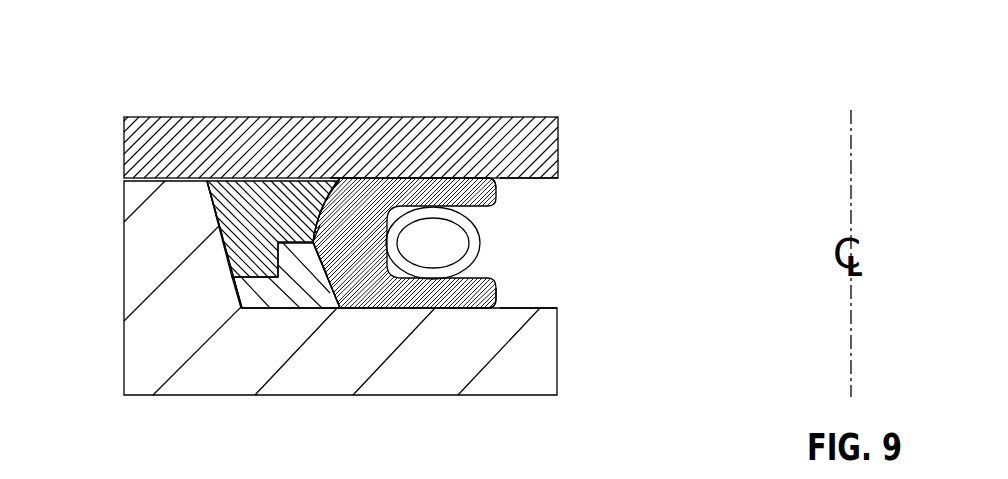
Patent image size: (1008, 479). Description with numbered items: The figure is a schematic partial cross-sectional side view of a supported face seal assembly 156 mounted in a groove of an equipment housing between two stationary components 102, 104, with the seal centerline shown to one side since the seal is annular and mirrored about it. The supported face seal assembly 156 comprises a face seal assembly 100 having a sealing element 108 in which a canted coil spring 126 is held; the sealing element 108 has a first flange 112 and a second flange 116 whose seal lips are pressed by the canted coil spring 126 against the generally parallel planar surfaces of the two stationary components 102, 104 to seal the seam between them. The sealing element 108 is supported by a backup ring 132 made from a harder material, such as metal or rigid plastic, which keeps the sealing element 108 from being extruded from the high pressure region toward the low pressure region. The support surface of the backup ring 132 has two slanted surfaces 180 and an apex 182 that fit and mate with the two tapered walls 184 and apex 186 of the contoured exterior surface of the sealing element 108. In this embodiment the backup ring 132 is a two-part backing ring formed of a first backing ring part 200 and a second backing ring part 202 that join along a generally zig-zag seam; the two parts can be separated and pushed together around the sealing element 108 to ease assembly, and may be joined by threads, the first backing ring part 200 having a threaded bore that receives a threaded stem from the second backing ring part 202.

The face seal assembly 100 is at (433, 244).
The stationary component 102 is at (555, 140).
The stationary component 104 is at (410, 319).
The sealing element 108 is at (434, 170).
The first flange 112 is at (480, 168).
The second flange 116 is at (465, 299).
The canted coil spring 126 is at (492, 236).
The backup ring 132 is at (203, 233).
The supported face seal assembly 156 is at (612, 210).
The slanted surfaces 180 is at (322, 198).
The apex 182 is at (283, 208).
The tapered walls 184 is at (340, 194).
The apex 186 is at (313, 243).
The first backing ring part 200 is at (215, 197).
The second backing ring part 202 is at (233, 353).